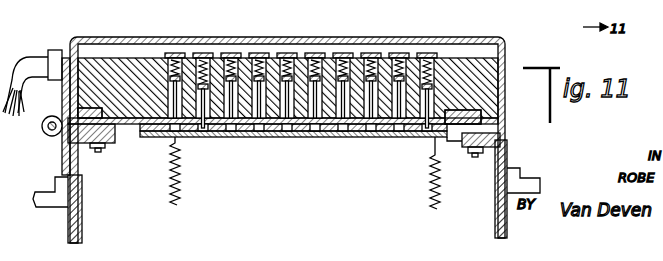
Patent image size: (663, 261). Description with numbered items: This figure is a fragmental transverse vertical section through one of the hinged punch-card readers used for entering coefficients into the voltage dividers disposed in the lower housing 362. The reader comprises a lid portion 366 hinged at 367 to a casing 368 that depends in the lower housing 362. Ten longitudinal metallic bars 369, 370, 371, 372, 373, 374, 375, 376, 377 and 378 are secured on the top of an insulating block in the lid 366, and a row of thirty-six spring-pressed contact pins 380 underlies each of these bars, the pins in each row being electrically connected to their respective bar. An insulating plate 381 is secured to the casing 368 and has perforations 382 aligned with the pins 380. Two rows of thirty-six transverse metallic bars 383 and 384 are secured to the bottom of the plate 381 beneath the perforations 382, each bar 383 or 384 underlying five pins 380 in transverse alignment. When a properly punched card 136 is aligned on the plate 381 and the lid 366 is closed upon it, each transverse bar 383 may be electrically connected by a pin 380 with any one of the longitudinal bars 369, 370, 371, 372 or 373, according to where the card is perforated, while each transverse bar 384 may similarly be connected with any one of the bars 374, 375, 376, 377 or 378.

The lid portion 366 is at (80, 40).
The hinge 367 is at (44, 133).
The casing 368 is at (68, 211).
The longitudinal metallic bar 369 is at (175, 53).
The longitudinal metallic bar 370 is at (203, 53).
The longitudinal metallic bar 371 is at (231, 53).
The longitudinal metallic bar 372 is at (259, 53).
The longitudinal metallic bar 373 is at (287, 53).
The longitudinal metallic bar 374 is at (315, 53).
The longitudinal metallic bar 375 is at (343, 53).
The longitudinal metallic bar 376 is at (371, 53).
The longitudinal metallic bar 377 is at (399, 53).
The longitudinal metallic bar 378 is at (427, 53).
The spring-pressed contact pin 380 is at (146, 131).
The punched card 136 is at (131, 136).
The transverse metallic bar 383 is at (282, 132).
The perforation 382 is at (310, 137).
The transverse metallic bar 384 is at (378, 137).
The insulating plate 381 is at (505, 130).
The lower housing 362 is at (545, 184).